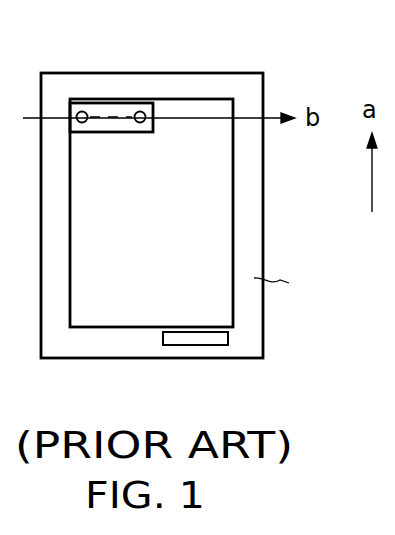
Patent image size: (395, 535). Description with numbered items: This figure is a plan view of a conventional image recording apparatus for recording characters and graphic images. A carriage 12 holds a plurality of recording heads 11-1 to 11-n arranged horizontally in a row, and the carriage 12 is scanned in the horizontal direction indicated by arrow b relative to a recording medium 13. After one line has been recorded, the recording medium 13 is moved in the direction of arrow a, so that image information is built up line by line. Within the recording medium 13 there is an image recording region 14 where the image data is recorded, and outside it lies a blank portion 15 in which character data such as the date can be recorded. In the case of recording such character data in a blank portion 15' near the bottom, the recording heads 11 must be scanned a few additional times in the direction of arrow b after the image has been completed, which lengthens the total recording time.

The recording heads 11 is at (124, 69).
The recording head 11-1 is at (82, 111).
The recording head 11-n is at (140, 111).
The carriage 12 is at (112, 134).
The recording medium 13 is at (263, 162).
The image recording region 14 is at (233, 229).
The blank portion 15 is at (289, 282).
The blank portion 15' is at (247, 342).